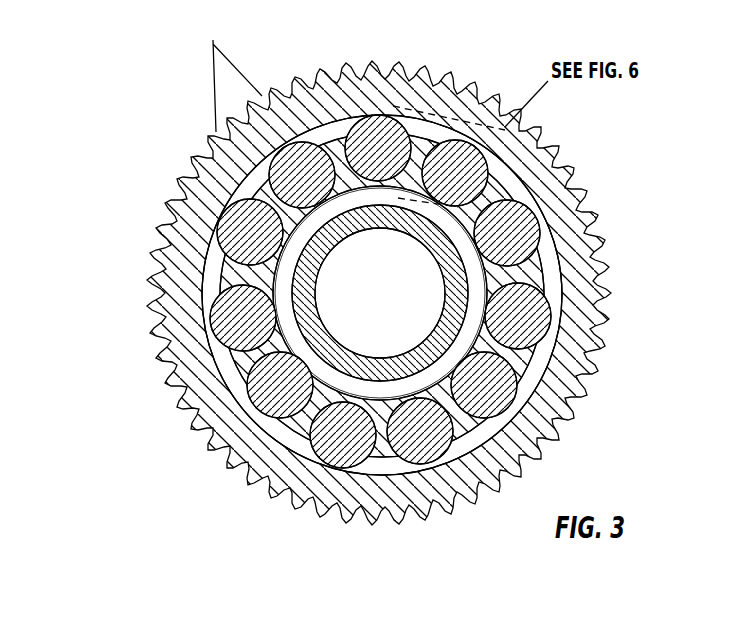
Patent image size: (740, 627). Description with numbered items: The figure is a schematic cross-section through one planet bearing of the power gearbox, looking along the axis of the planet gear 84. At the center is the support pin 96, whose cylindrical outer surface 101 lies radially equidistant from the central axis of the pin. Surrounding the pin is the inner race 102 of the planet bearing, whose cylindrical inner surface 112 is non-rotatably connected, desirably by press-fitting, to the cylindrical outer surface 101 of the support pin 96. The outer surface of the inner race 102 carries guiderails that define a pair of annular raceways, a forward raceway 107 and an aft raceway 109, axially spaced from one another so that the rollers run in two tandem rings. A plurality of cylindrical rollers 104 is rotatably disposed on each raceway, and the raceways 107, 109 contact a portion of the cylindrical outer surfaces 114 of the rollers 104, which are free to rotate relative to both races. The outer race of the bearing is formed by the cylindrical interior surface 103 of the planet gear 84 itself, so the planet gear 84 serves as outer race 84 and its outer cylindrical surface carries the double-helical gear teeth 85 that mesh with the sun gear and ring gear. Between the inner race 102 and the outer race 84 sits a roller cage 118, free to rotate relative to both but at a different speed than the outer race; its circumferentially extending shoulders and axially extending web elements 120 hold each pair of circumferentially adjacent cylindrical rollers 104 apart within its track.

The planet gear 84 is at (377, 118).
The gear teeth 85 is at (231, 73).
The support pin 96 is at (340, 232).
The cylindrical outer surface 101 is at (462, 296).
The inner race 102 is at (280, 308).
The cylindrical interior surface 103 is at (455, 125).
The cylindrical rollers 104 is at (292, 172).
The forward raceway 107 is at (340, 150).
The aft raceway 109 is at (382, 295).
The cylindrical inner surface 112 is at (305, 340).
The cylindrical outer surfaces 114 is at (213, 268).
The roller cage 118 is at (300, 415).
The web elements 120 is at (497, 185).